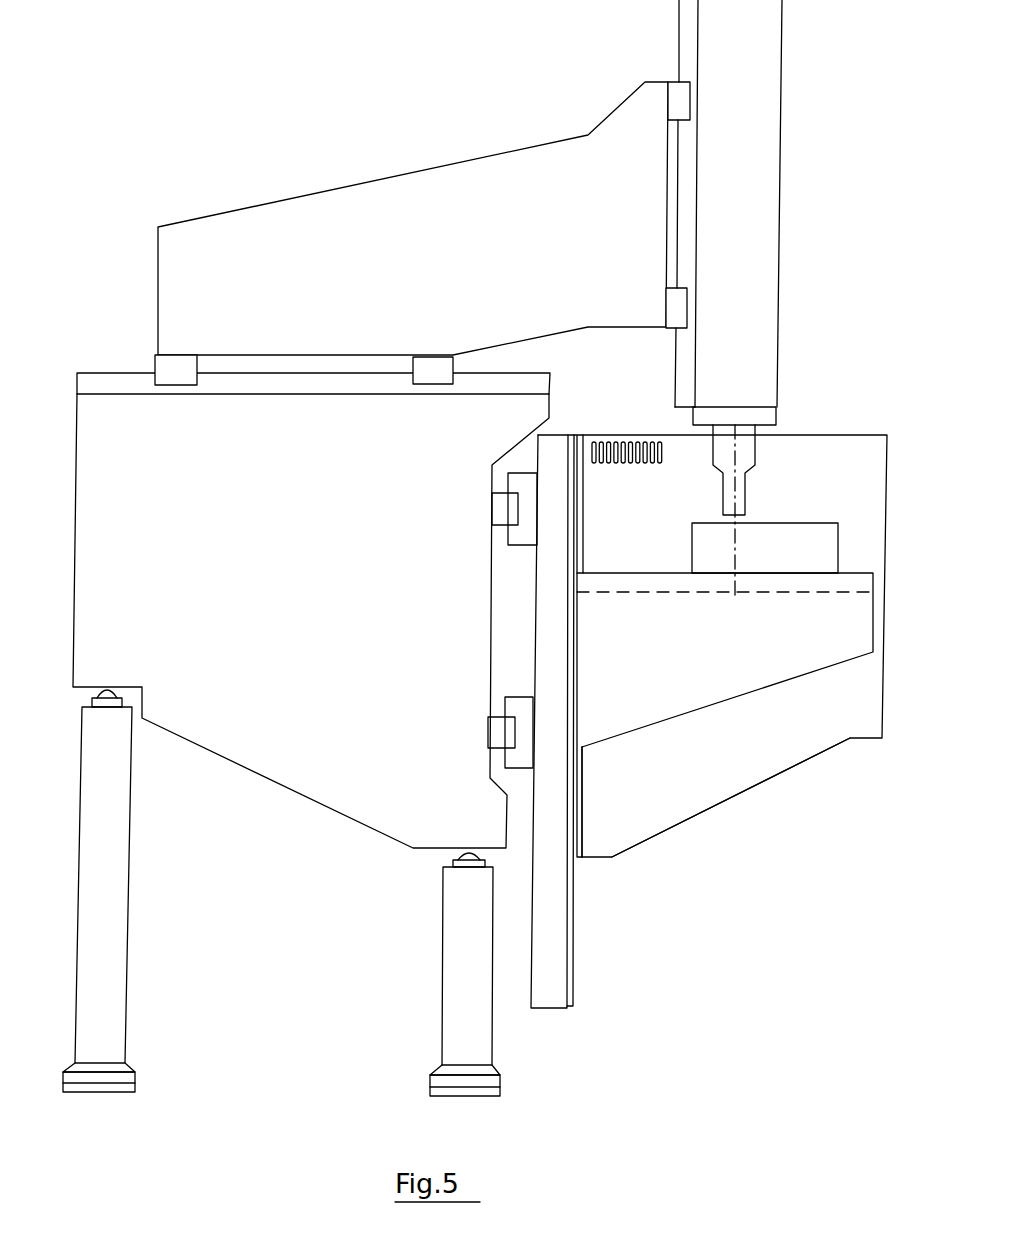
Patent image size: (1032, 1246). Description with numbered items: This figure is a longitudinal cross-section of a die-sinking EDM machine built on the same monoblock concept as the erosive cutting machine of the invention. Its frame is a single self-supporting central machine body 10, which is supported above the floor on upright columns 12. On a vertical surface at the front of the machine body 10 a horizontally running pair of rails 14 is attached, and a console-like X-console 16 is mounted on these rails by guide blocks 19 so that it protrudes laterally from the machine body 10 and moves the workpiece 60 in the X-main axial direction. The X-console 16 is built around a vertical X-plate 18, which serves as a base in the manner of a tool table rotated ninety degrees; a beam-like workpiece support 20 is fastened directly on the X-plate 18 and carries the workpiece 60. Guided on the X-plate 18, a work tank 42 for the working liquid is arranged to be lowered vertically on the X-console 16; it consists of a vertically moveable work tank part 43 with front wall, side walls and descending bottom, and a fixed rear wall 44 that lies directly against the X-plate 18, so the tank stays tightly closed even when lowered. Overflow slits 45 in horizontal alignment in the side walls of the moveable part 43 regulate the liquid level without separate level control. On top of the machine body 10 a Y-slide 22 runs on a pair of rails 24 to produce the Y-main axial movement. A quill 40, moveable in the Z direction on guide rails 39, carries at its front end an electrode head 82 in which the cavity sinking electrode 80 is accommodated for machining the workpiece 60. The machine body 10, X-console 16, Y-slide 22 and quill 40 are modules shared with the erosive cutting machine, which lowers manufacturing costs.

The machine body 10 is at (301, 594).
The columns 12 is at (112, 992).
The pair of rails 14 is at (497, 511).
The X-console 16 is at (804, 773).
The X-plate 18 is at (548, 985).
The guide block 19 is at (512, 488).
The workpiece support 20 is at (765, 670).
The Y-slide 22 is at (430, 263).
The pair of rails 24 is at (107, 383).
The guide rails 39 is at (679, 15).
The quill 40 is at (762, 160).
The work tank 42 is at (885, 653).
The work tank part 43 is at (697, 779).
The rear wall 44 is at (568, 918).
The overflow slits 45 is at (620, 435).
The workpiece 60 is at (700, 544).
The cavity sinking electrode 80 is at (737, 497).
The electrode head 82 is at (765, 417).